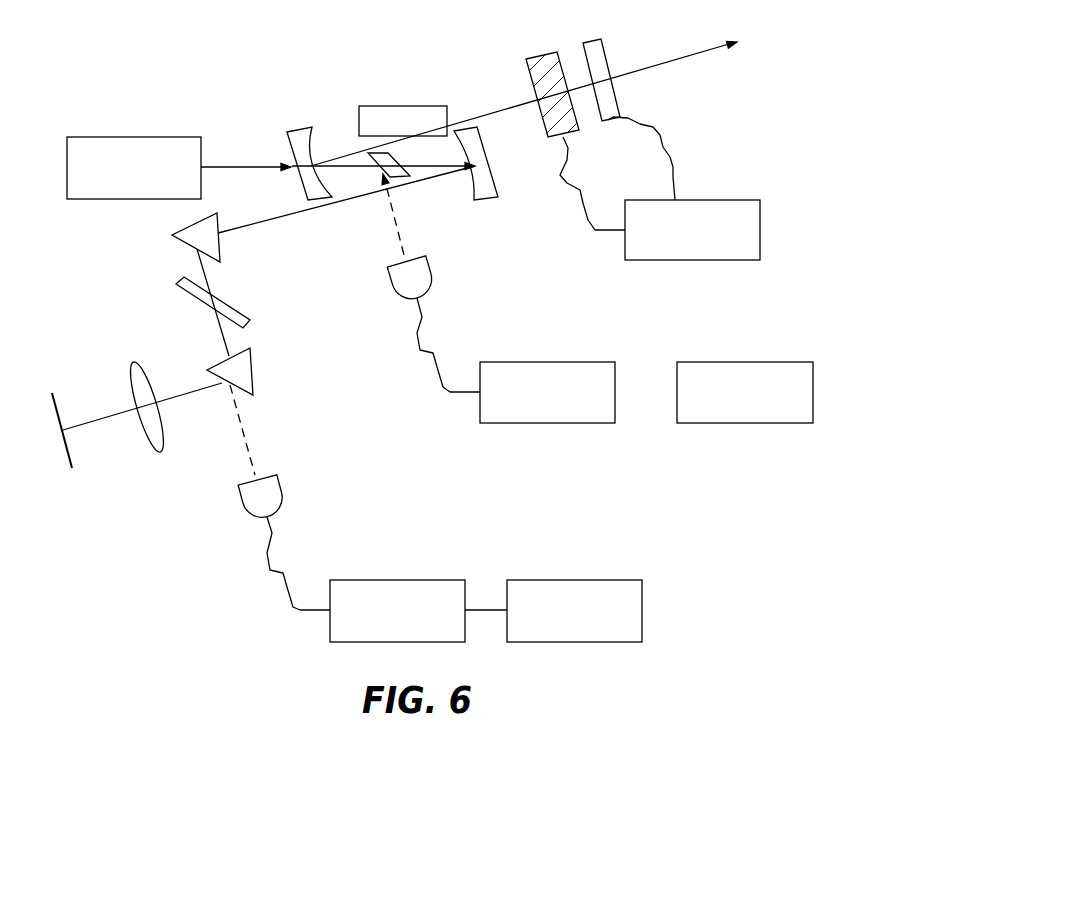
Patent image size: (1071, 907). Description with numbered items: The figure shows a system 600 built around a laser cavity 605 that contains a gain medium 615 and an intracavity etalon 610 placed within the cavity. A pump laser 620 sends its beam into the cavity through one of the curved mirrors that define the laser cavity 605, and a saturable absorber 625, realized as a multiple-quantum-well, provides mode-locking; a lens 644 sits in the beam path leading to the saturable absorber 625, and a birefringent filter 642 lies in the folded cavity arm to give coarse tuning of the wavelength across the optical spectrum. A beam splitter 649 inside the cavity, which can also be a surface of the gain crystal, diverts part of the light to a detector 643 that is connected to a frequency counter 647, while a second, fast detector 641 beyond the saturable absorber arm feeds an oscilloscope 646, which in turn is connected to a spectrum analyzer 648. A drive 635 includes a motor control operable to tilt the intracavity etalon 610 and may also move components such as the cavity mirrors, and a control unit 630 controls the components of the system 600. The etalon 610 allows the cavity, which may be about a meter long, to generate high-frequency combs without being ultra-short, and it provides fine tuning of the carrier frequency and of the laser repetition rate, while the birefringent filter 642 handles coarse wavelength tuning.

The system 600 is at (168, 36).
The laser cavity 605 is at (450, 68).
The intracavity etalon 610 is at (543, 52).
The gain medium 615 is at (403, 105).
The pump laser 620 is at (133, 137).
The saturable absorber 625 is at (64, 453).
The control unit 630 is at (748, 362).
The drive 635 is at (693, 198).
The detector 641 is at (241, 500).
The birefringent filter 642 is at (107, 238).
The detector 643 is at (392, 281).
The lens 644 is at (135, 363).
The oscilloscope 646 is at (398, 580).
The frequency counter 647 is at (548, 362).
The spectrum analyzer 648 is at (575, 580).
The beam splitter 649 is at (403, 180).